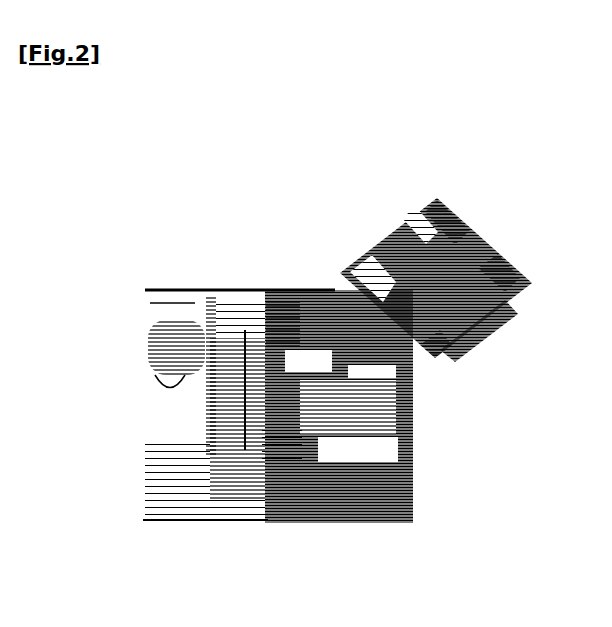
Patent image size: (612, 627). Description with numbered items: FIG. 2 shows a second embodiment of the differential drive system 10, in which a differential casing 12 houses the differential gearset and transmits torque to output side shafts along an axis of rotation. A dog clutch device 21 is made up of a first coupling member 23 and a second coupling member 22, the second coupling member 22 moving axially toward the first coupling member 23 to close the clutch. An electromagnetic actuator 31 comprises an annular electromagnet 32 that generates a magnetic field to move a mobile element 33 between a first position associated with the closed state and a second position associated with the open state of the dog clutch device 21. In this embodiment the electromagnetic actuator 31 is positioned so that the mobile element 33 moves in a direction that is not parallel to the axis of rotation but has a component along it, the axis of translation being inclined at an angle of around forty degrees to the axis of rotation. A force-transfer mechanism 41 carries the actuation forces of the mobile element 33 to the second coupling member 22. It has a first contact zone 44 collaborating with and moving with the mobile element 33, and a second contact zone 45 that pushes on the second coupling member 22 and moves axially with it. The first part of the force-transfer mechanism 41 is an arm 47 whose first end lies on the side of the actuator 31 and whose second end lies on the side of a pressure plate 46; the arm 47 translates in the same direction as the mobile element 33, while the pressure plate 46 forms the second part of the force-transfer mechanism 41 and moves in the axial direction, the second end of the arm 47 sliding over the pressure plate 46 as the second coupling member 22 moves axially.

The differential drive system 10 is at (277, 156).
The differential casing 12 is at (160, 288).
The dog clutch device 21 is at (213, 281).
The second coupling member 22 is at (237, 293).
The first coupling member 23 is at (195, 293).
The electromagnetic actuator 31 is at (374, 220).
The annular electromagnet 32 is at (460, 337).
The mobile element 33 is at (452, 203).
The force-transfer mechanism 41 is at (308, 350).
The first contact zone 44 is at (435, 367).
The second contact zone 45 is at (273, 320).
The pressure plate 46 is at (280, 442).
The arm 47 is at (313, 353).